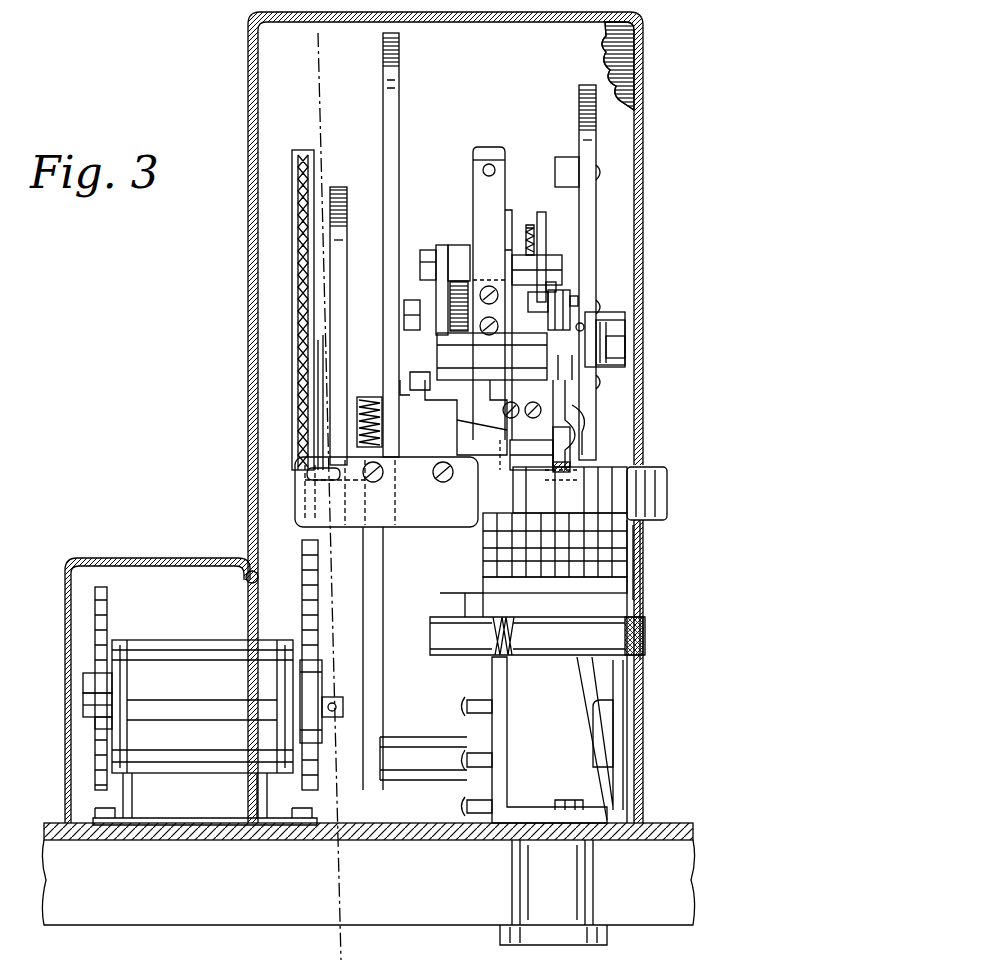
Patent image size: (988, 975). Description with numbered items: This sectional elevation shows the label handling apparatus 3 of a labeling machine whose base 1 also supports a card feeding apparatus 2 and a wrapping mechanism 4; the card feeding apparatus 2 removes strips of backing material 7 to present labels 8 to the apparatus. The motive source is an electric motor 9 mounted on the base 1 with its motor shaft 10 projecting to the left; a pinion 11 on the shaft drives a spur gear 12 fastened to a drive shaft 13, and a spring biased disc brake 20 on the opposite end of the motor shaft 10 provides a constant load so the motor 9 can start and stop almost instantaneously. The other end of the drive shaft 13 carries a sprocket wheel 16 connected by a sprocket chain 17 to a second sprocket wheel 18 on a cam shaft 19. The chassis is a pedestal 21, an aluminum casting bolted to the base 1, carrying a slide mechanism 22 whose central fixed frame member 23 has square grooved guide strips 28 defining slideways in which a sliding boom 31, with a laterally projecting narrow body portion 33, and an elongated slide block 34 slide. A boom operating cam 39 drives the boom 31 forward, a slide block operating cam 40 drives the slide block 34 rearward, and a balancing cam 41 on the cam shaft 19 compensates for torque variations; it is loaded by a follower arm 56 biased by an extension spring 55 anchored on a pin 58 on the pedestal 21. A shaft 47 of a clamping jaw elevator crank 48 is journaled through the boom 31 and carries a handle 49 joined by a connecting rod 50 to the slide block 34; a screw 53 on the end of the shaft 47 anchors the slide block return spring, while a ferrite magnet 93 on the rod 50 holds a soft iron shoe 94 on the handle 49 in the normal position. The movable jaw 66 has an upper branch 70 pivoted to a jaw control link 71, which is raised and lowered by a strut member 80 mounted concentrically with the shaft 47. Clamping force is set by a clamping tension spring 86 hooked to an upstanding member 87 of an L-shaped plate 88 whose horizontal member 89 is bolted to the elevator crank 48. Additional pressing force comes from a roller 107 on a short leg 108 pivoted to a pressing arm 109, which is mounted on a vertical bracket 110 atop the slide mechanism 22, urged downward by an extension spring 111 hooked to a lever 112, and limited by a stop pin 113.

The base 1 is at (690, 822).
The card feeding apparatus 2 is at (658, 575).
The label handling apparatus 3 is at (213, 511).
The wrapping mechanism 4 is at (309, 46).
The strips of backing material 7 is at (483, 590).
The labels 8 is at (483, 555).
The electric motor 9 is at (172, 640).
The motor shaft 10 is at (83, 708).
The pinion 11 is at (97, 724).
The spur gear 12 is at (95, 598).
The drive shaft 13 is at (83, 677).
The sprocket wheel 16 is at (322, 666).
The sprocket chain 17 is at (318, 583).
The sprocket wheel 18 is at (292, 204).
The cam shaft 19 is at (324, 330).
The spring biased disc brake 20 is at (328, 690).
The pedestal 21 is at (480, 692).
The slide mechanism 22 is at (450, 427).
The central fixed frame member 23 is at (500, 450).
The square grooved guide strips 28 is at (456, 405).
The sliding boom 31 is at (517, 338).
The narrow body portion 33 is at (570, 300).
The slide block 34 is at (507, 404).
The boom operating cam 39 is at (588, 85).
The slide block operating cam 40 is at (400, 57).
The balancing cam 41 is at (339, 187).
The shaft 47 is at (427, 384).
The clamping jaw elevator crank 48 is at (414, 398).
The handle 49 is at (442, 245).
The connecting rod 50 is at (427, 250).
The screw 53 is at (417, 325).
The extension spring 55 is at (384, 432).
The follower arm 56 is at (383, 562).
The pin 58 is at (413, 737).
The movable jaw 66 is at (553, 488).
The upper branch 70 is at (553, 441).
The jaw control link 71 is at (580, 412).
The strut member 80 is at (615, 343).
The clamping tension spring 86 is at (584, 326).
The upstanding member 87 is at (607, 357).
The L-shaped plate 88 is at (588, 408).
The horizontal member 89 is at (508, 448).
The ferrite magnet 93 is at (460, 246).
The magnetic soft iron shoe 94 is at (480, 283).
The roller 107 is at (578, 303).
The short leg 108 is at (548, 300).
The pressing arm 109 is at (562, 262).
The vertical bracket 110 is at (510, 240).
The extension spring 111 is at (536, 232).
The lever 112 is at (542, 212).
The stop pin 113 is at (556, 287).